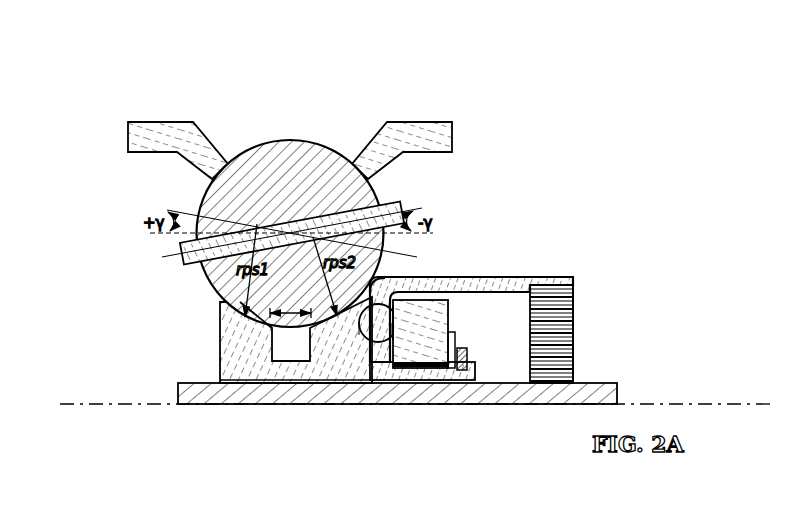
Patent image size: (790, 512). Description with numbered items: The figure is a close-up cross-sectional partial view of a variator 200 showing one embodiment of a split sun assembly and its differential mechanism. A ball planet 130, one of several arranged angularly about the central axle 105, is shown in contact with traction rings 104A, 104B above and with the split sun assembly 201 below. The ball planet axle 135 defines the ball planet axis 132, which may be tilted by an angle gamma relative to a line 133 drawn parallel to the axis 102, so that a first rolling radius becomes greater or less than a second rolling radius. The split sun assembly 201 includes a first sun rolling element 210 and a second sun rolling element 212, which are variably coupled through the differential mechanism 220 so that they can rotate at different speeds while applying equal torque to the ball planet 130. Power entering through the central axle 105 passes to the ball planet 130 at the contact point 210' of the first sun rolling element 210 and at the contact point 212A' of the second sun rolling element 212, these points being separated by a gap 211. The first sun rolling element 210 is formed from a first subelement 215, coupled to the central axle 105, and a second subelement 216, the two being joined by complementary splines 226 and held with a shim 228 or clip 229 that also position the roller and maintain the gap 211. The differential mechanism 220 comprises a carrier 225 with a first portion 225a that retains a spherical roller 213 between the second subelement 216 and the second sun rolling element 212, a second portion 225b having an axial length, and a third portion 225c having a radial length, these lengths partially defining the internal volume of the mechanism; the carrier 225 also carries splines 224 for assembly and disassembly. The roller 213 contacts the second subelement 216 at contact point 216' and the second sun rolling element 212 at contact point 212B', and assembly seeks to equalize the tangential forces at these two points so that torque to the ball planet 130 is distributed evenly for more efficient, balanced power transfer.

The axis 102 is at (87, 404).
The traction ring 104A is at (130, 137).
The traction ring 104B is at (453, 135).
The central axle 105 is at (178, 392).
The ball planet 130 is at (253, 140).
The ball planet axis 132 is at (177, 252).
The line 133 is at (147, 233).
The ball planet axle 135 is at (168, 259).
The variator 200 is at (568, 93).
The split sun assembly 201 is at (533, 172).
The first sun rolling element 210 is at (233, 340).
The contact point 210' is at (218, 318).
The gap 211 is at (290, 306).
The second sun rolling element 212 is at (375, 344).
The contact point 212A' is at (314, 385).
The contact point 212B' is at (347, 402).
The roller 213 is at (368, 358).
The first subelement 215 is at (220, 358).
The second subelement 216 is at (449, 334).
The contact point 216' is at (450, 316).
The differential mechanism 220 is at (598, 260).
The splines 224 is at (568, 350).
The carrier 225 is at (533, 277).
The first portion 225a is at (375, 292).
The second portion 225b is at (470, 276).
The third portion 225c is at (580, 315).
The splines 226 is at (423, 372).
The shim 228 is at (455, 340).
The clip 229 is at (467, 352).